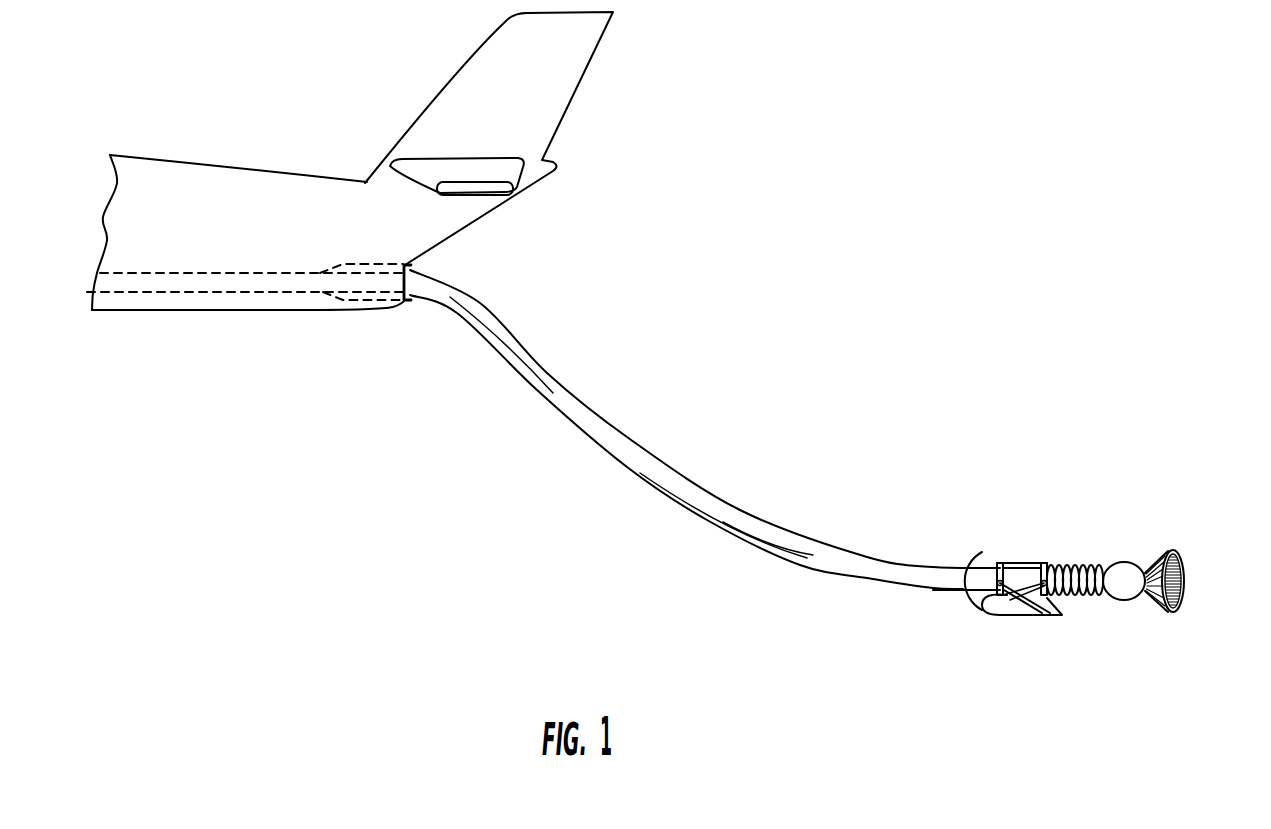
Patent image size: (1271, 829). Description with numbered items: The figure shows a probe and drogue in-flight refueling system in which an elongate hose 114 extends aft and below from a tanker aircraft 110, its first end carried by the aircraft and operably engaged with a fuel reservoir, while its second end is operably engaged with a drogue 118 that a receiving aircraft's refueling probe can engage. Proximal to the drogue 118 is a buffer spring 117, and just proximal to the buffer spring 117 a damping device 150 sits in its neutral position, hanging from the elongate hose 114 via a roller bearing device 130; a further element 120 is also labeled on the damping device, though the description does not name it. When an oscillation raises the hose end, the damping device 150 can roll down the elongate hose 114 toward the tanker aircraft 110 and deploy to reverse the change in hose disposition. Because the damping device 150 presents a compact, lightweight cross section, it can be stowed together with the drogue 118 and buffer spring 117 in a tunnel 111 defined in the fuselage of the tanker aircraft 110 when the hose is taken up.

The tanker aircraft 110 is at (273, 197).
The tunnel 111 is at (343, 277).
The elongate hose 114 is at (587, 433).
The damping device 150 is at (963, 578).
The roller bearing device 130 is at (1002, 562).
The lever handle 120 is at (1007, 603).
The buffer spring 117 is at (1075, 562).
The drogue 118 is at (1130, 557).